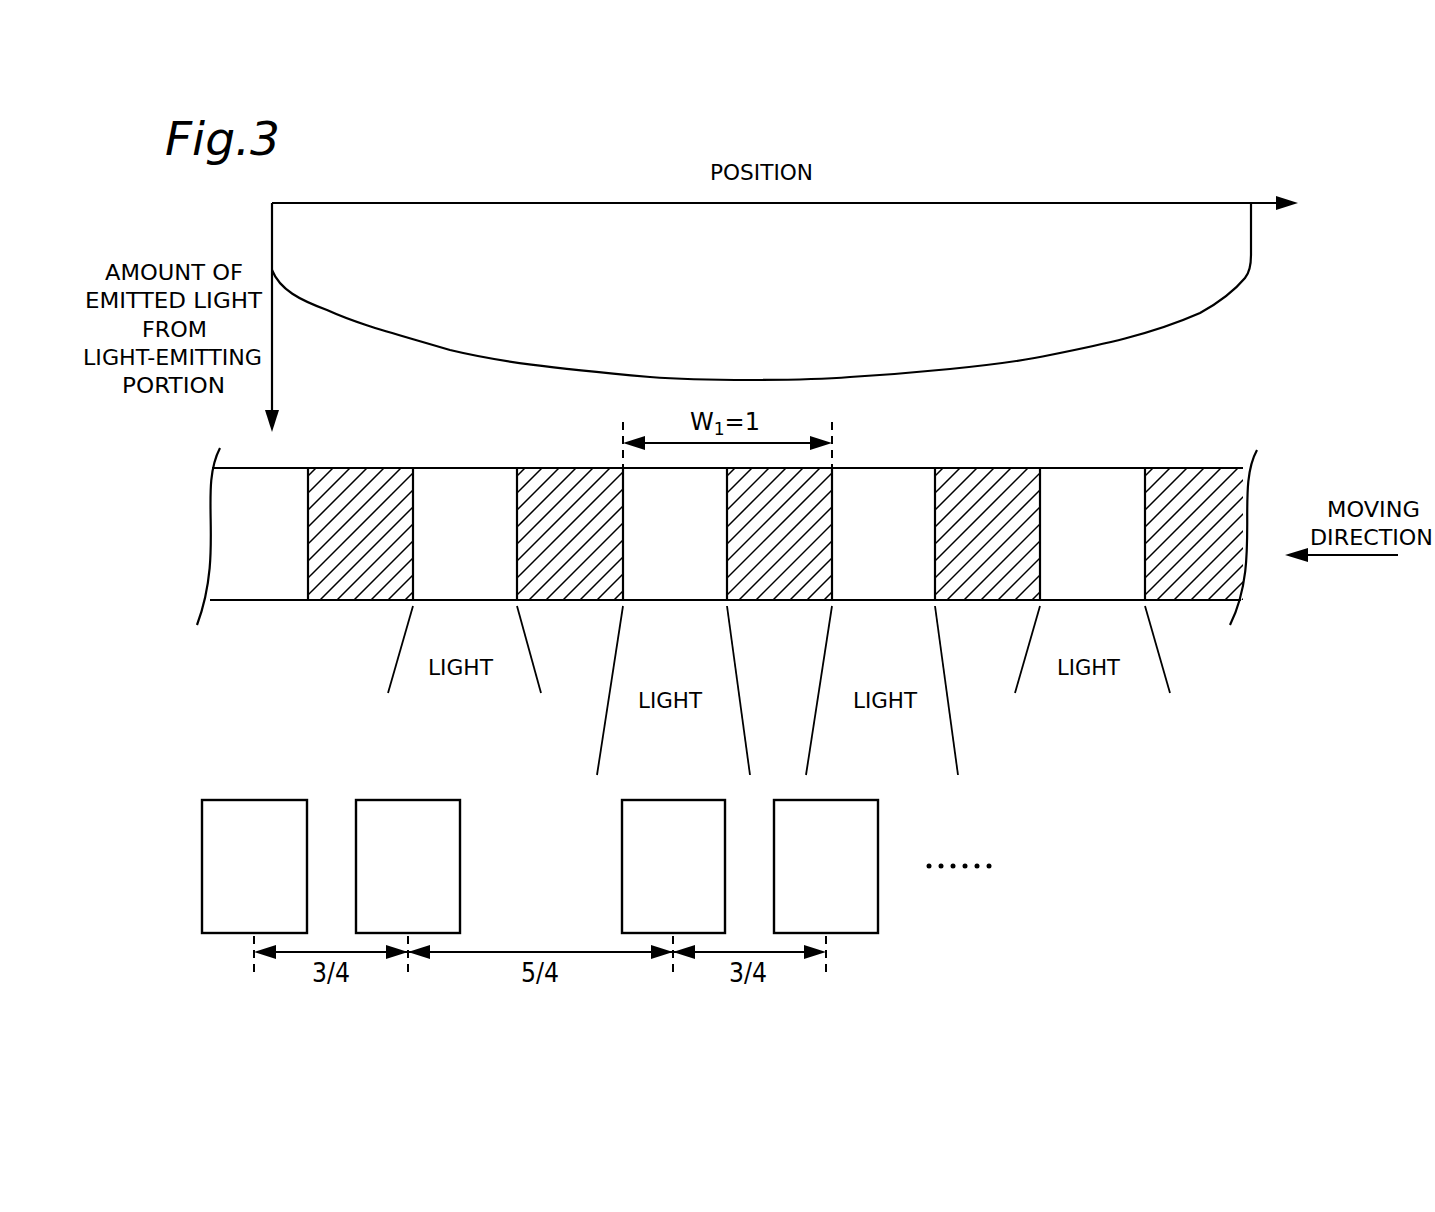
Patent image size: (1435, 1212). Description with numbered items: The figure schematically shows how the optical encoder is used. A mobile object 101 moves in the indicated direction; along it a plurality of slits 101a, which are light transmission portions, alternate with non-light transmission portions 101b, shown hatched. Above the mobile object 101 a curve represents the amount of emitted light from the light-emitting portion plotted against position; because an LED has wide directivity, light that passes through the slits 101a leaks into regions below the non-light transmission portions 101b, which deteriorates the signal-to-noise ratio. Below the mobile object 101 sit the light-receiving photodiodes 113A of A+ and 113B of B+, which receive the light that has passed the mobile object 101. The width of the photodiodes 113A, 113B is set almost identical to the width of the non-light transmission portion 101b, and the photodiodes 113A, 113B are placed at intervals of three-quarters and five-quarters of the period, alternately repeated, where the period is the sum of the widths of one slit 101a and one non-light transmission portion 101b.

The mobile object 101 is at (779, 500).
The slit 101a is at (898, 493).
The non-light transmission portion 101b is at (1003, 493).
The light-receiving photodiode 113A is at (250, 800).
The light-receiving photodiode 113B is at (404, 800).